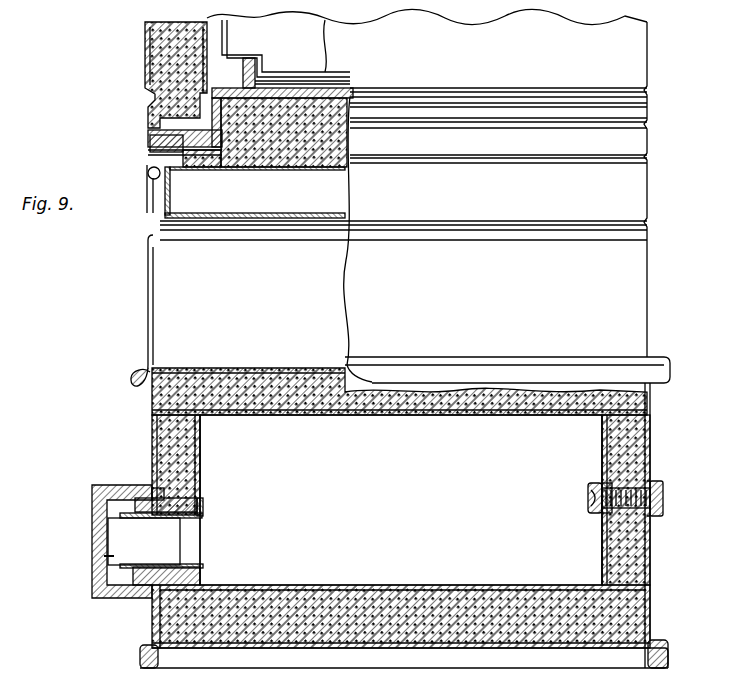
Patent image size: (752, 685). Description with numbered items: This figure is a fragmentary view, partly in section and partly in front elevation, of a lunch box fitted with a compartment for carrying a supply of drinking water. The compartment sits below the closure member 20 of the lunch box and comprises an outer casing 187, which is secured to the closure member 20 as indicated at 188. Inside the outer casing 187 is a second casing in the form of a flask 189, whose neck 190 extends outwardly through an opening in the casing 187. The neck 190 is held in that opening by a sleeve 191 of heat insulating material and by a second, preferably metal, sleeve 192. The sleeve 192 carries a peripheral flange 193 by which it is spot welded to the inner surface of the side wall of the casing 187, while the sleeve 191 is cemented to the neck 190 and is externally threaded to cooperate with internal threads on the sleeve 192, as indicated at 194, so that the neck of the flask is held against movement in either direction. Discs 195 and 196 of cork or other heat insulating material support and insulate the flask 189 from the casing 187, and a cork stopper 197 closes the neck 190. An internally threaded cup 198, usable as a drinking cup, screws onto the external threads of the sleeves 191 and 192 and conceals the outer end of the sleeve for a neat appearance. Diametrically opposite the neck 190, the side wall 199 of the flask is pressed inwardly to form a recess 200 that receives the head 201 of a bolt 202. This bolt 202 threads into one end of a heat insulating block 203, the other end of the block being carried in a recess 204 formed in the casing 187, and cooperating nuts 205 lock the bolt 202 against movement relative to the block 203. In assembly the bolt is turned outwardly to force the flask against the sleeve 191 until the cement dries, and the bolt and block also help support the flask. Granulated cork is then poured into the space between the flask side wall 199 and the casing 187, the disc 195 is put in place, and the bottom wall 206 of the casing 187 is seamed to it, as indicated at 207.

The closure member 20 is at (144, 288).
The outer casing 187 is at (152, 430).
The securing connection 188 is at (132, 376).
The flask 189 is at (401, 500).
The neck 190 is at (188, 517).
The sleeve 191 is at (200, 498).
The second sleeve 192 is at (188, 500).
The peripheral flange 193 is at (162, 488).
The threads 194 is at (182, 567).
The cork disc 195 is at (375, 588).
The cork disc 196 is at (287, 398).
The cork stopper 197 is at (110, 556).
The internally threaded cup 198 is at (92, 520).
The side wall of the flask 199 is at (602, 445).
The recess 200 is at (590, 488).
The head 201 is at (592, 502).
The bolt 202 is at (630, 466).
The heat insulating block 203 is at (655, 516).
The recess 204 is at (664, 497).
The nuts 205 is at (606, 514).
The bottom wall 206 is at (298, 650).
The seam 207 is at (142, 658).